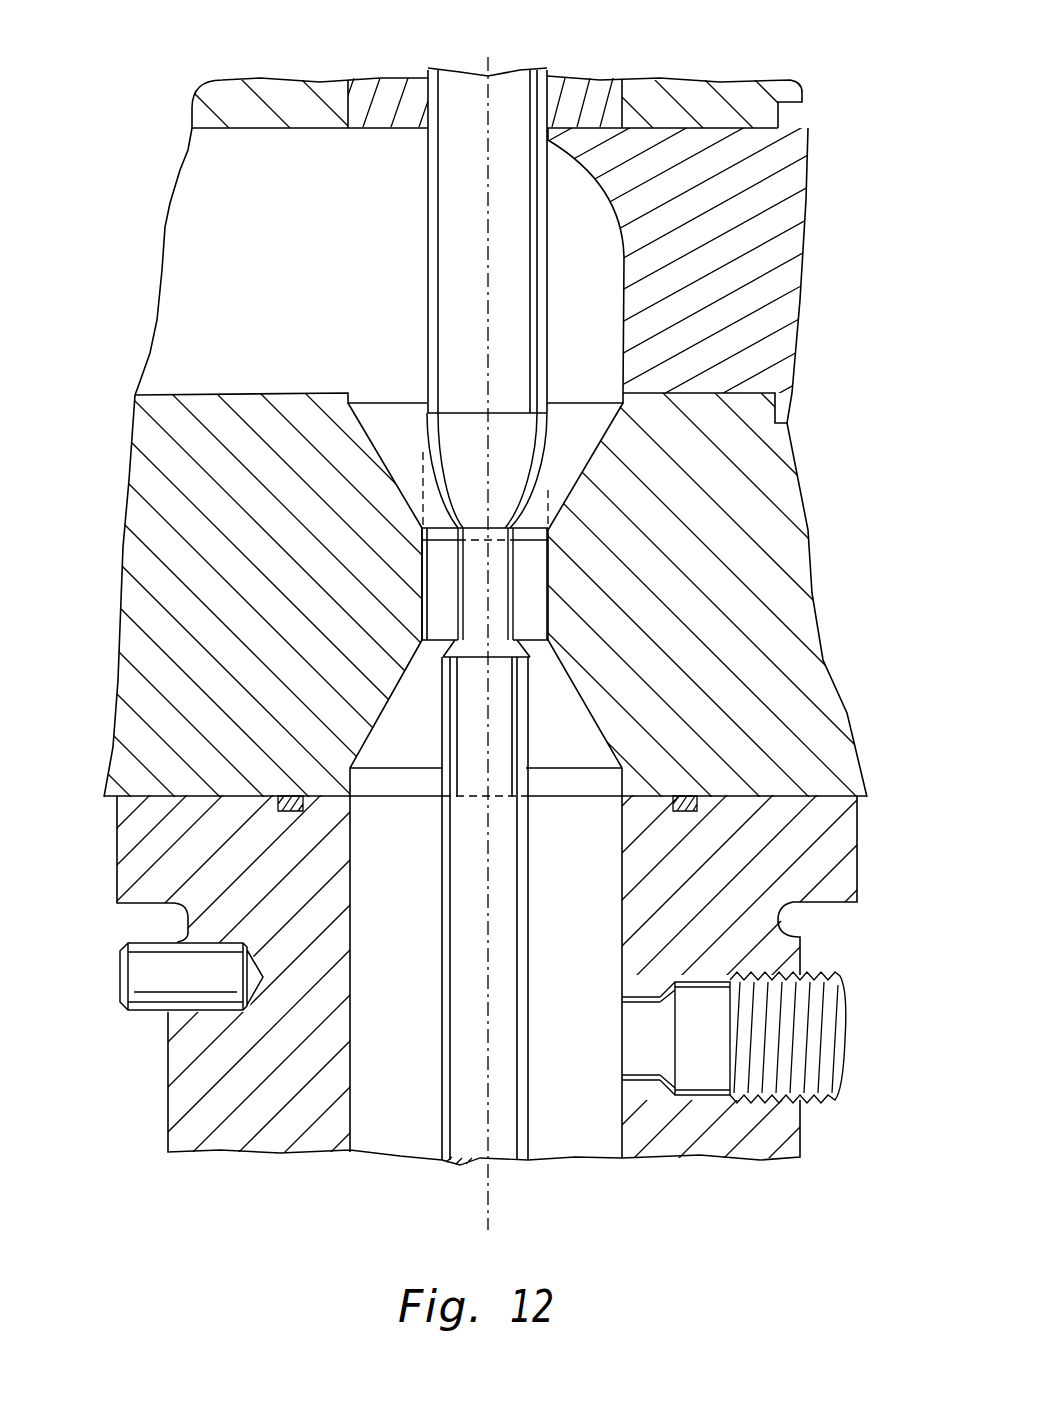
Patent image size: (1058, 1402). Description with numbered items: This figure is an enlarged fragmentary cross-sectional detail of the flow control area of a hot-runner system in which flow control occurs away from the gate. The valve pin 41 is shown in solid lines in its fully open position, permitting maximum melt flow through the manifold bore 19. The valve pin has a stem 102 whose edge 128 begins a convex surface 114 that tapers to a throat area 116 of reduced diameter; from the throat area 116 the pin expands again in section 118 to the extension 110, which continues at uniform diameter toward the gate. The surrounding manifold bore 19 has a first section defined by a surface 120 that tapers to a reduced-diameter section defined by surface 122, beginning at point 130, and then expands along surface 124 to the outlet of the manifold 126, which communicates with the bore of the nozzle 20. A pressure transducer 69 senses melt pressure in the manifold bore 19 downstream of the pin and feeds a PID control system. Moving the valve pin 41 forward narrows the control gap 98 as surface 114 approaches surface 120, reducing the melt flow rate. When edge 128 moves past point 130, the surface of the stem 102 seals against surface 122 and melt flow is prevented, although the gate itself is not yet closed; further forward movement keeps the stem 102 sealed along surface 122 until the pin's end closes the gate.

The manifold bore 19 is at (188, 235).
The nozzle bore 20 is at (582, 1160).
The valve pin 41 is at (497, 77).
The pressure transducer 69 is at (848, 1002).
The control gap 98 is at (413, 492).
The stem of the valve pin 102 is at (460, 87).
The extension 110 is at (505, 858).
The convex surface 114 is at (535, 495).
The throat area 116 is at (512, 577).
The section of the valve pin 118 is at (540, 642).
The tapering surface of the manifold 120 is at (567, 480).
The surface of reduced diameter 122 is at (540, 614).
The expanding surface of the manifold 124 is at (575, 716).
The outlet of the manifold 126 is at (373, 782).
The edge of the stem 128 is at (502, 420).
The point of the manifold bore 130 is at (422, 528).